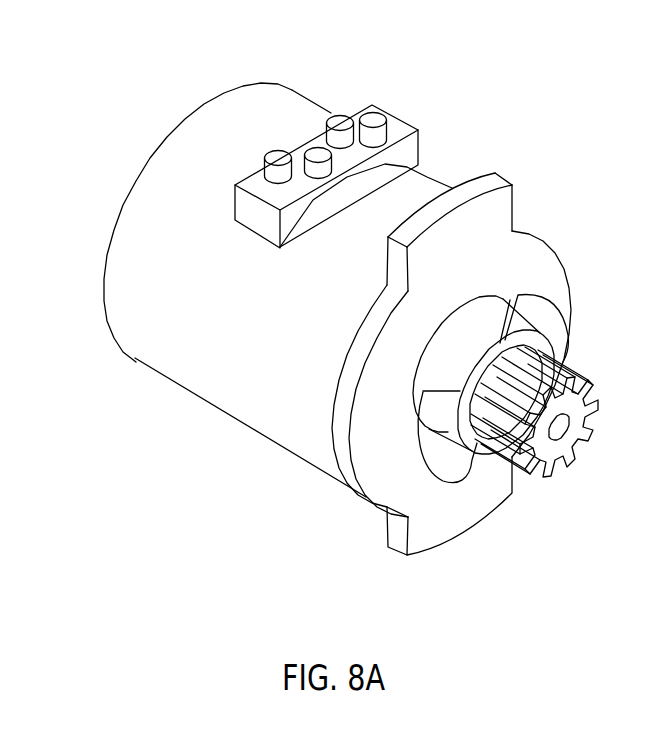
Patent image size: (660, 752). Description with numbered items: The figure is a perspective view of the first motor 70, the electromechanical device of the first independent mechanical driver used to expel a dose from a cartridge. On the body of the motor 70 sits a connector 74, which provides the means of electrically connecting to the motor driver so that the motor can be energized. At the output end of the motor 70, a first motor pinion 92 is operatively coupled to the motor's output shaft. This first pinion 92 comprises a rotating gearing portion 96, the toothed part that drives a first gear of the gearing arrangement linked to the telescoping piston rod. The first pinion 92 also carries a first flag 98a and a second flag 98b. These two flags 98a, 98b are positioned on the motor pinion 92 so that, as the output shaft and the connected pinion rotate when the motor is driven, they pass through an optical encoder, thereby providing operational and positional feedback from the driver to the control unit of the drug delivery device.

The motor 70 is at (200, 395).
The connector 74 is at (403, 130).
The first motor pinion 92 is at (560, 357).
The rotating gearing portion 96 is at (560, 383).
The first flag 98a is at (530, 312).
The second flag 98b is at (443, 452).